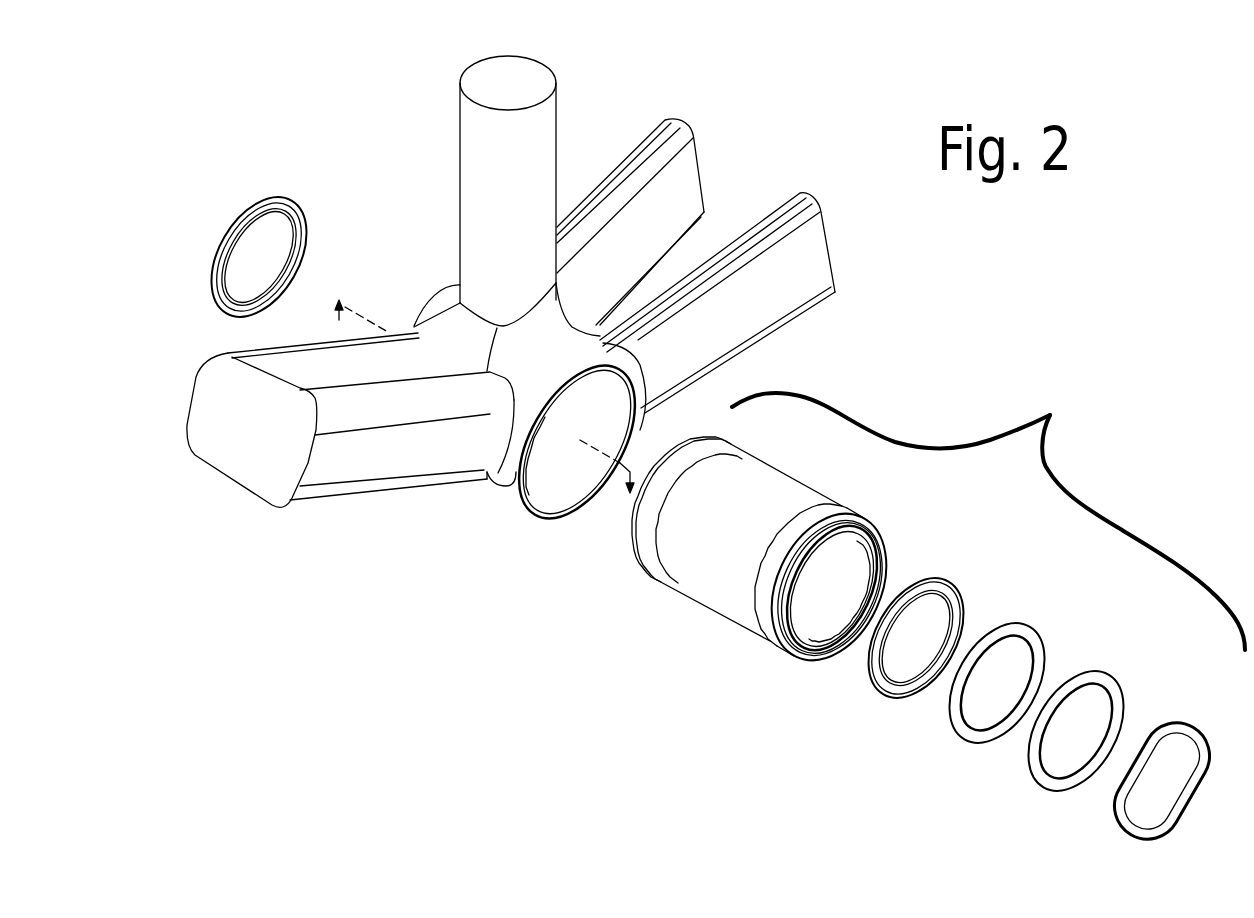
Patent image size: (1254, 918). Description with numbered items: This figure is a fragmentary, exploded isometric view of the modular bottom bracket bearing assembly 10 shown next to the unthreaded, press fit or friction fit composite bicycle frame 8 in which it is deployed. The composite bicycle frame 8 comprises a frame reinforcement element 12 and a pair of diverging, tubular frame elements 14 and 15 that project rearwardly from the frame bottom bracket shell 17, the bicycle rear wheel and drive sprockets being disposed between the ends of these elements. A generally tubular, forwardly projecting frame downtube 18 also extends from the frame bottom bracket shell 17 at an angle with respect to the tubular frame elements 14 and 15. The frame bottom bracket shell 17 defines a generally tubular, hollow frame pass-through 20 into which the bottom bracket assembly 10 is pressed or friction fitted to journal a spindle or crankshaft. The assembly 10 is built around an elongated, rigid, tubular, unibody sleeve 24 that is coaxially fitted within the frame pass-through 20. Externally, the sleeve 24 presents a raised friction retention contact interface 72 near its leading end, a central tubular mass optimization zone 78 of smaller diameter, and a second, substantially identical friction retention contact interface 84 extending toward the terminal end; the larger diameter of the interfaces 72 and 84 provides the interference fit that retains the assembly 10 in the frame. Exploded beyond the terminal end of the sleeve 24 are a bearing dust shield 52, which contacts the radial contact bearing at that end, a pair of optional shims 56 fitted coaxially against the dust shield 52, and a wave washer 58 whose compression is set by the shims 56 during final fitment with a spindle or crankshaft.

The composite bicycle frame 8 is at (478, 236).
The modular bottom bracket bearing assembly 10 is at (988, 516).
The frame reinforcement element 12 is at (604, 207).
The tubular frame element 14 is at (677, 183).
The tubular frame element 15 is at (780, 297).
The frame bottom bracket shell 17 is at (507, 493).
The frame downtube 18 is at (335, 470).
The frame pass-through 20 is at (560, 480).
The tubular sleeve 24 is at (765, 500).
The bearing dust shield 52 is at (935, 582).
The shims 56 is at (1087, 673).
The wave washer 58 is at (1190, 740).
The friction retention contact interface 72 is at (650, 527).
The mass optimization zone 78 is at (713, 560).
The friction retention contact interface 84 is at (763, 607).